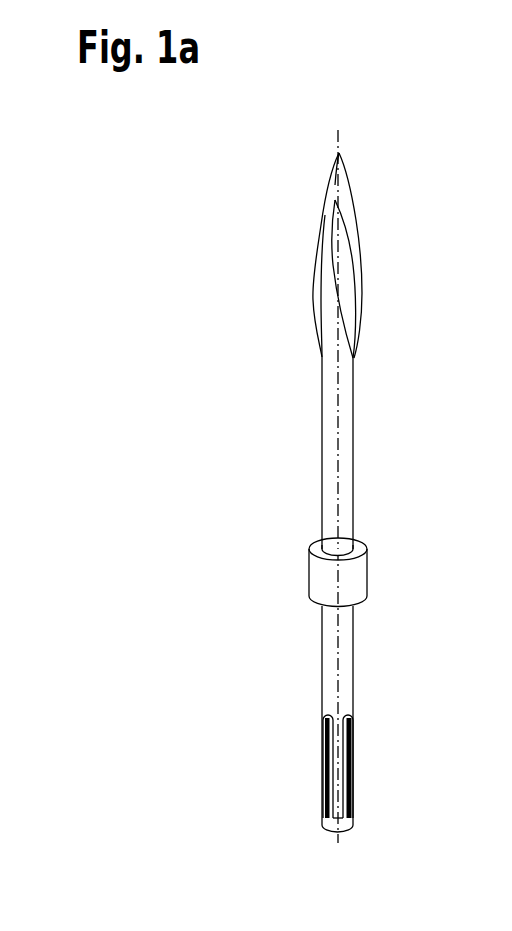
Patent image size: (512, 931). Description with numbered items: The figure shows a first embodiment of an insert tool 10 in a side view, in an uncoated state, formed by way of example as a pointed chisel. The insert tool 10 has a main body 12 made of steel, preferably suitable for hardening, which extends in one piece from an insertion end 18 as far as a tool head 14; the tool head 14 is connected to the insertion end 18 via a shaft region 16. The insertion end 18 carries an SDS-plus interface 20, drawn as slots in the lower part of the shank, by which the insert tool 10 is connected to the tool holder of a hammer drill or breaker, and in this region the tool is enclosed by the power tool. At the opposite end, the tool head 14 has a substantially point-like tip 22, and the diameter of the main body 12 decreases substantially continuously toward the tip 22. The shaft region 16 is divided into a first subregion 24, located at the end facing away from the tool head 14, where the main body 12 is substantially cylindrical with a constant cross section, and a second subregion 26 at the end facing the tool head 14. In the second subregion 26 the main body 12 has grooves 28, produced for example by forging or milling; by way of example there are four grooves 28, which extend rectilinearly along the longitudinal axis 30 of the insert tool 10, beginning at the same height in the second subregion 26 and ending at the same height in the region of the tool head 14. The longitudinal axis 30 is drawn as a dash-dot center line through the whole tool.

The insert tool 10 is at (174, 189).
The main body 12 is at (348, 490).
The tool head 14 is at (288, 246).
The shaft region 16 is at (239, 444).
The insertion end 18 is at (276, 666).
The SDS-plus interface 20 is at (276, 761).
The tip 22 is at (343, 156).
The first subregion 24 is at (240, 513).
The second subregion 26 is at (295, 272).
The grooves 28 is at (327, 315).
The longitudinal axis 30 is at (339, 132).